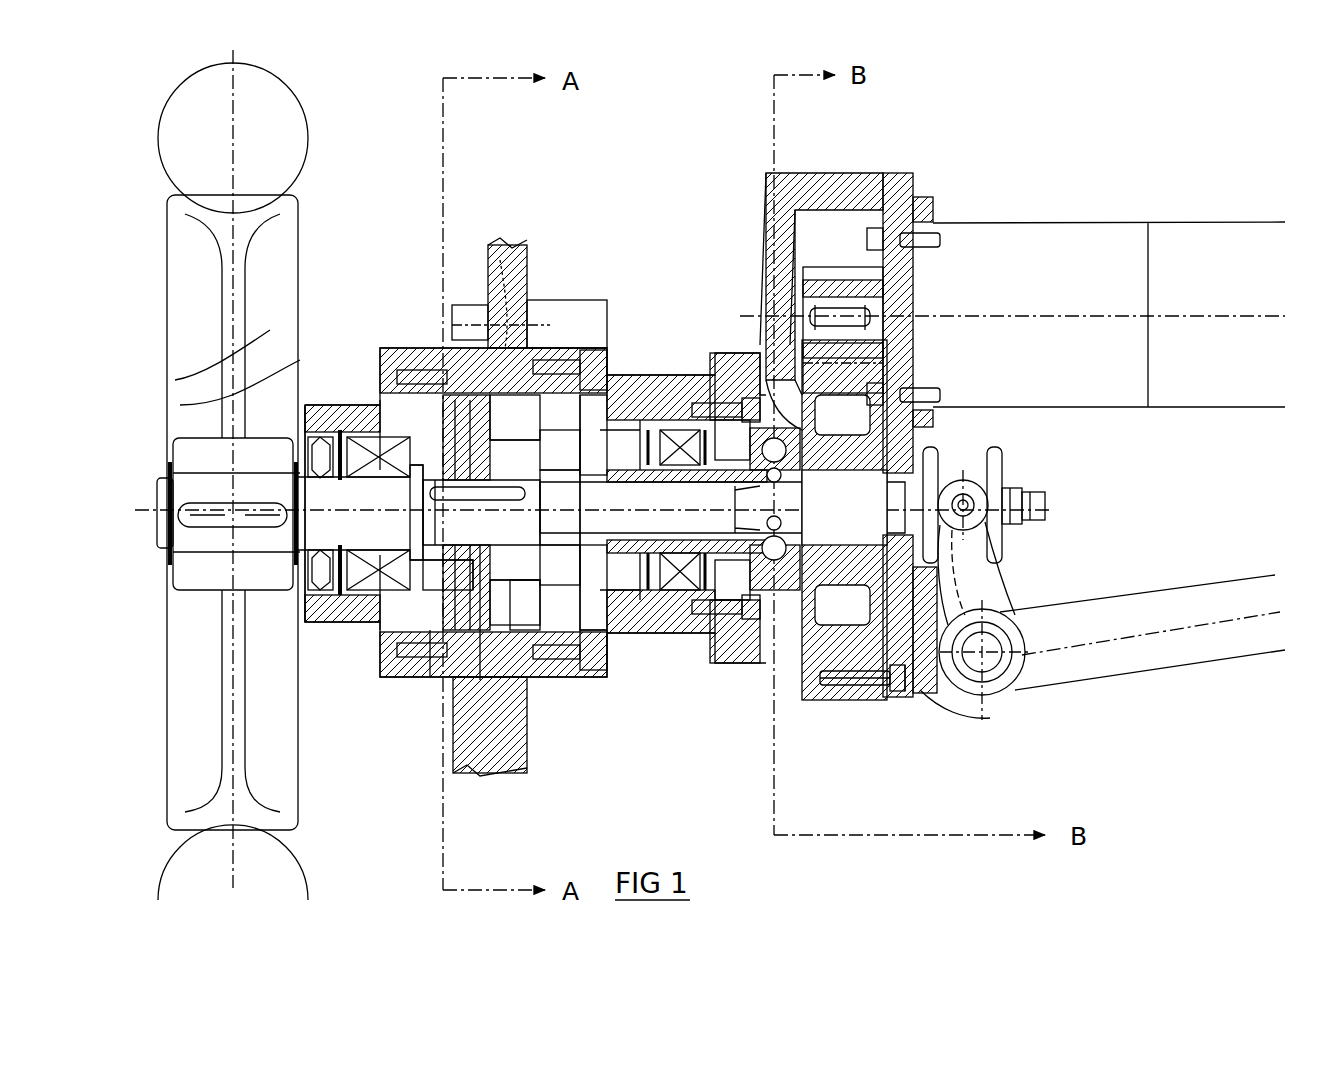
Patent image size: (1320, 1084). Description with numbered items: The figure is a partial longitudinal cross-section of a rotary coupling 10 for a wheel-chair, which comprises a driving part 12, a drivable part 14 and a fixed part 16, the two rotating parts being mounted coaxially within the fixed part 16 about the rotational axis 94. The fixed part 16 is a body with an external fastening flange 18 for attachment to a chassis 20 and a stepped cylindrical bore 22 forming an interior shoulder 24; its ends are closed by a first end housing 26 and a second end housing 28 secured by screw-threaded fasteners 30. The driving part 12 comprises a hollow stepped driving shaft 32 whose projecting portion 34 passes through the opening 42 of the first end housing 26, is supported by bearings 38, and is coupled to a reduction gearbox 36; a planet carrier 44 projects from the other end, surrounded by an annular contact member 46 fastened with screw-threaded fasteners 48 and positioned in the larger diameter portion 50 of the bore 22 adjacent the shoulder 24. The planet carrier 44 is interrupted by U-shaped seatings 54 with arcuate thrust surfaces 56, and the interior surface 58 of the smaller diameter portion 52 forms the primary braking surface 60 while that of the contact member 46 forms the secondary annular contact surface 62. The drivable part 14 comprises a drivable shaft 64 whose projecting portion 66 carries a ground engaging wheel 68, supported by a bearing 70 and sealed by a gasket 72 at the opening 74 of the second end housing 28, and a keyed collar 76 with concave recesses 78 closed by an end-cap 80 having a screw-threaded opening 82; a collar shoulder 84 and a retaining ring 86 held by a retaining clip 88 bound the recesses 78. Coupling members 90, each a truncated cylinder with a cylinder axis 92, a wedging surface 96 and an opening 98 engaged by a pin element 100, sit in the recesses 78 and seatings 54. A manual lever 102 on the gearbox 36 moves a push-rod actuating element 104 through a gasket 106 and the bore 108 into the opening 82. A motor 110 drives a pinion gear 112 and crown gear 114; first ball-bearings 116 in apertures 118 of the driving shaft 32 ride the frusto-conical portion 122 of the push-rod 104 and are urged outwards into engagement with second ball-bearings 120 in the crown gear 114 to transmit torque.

The rotary coupling 10 is at (360, 200).
The driving part 12 is at (640, 430).
The drivable part 14 is at (392, 462).
The fixed part 16 is at (555, 380).
The external fastening flange 18 is at (482, 400).
The chassis 20 is at (500, 300).
The stepped cylindrical bore 22 is at (430, 420).
The interior shoulder 24 is at (510, 730).
The first end housing 26 is at (670, 630).
The second end housing 28 is at (335, 600).
The screw-threaded fasteners 30 is at (400, 640).
The driving shaft 32 is at (665, 600).
The projecting portion 34 is at (982, 700).
The reduction gearbox 36 is at (830, 700).
The bearings 38 is at (680, 430).
The opening 42 is at (770, 665).
The planet carrier 44 is at (450, 400).
The annular contact member 46 is at (580, 640).
The screw-threaded fasteners 48 is at (555, 620).
The larger diameter portion 50 is at (416, 512).
The smaller diameter portion 52 is at (440, 600).
The U-shaped seatings 54 is at (515, 510).
The arcuate thrust surfaces 56 is at (485, 680).
The interior surface 58 is at (448, 575).
The primary braking surface 60 is at (460, 400).
The secondary annular contact surface 62 is at (590, 430).
The drivable shaft 64 is at (395, 600).
The projecting portion 66 is at (205, 590).
The ground engaging wheel 68 is at (190, 812).
The bearing 70 is at (430, 620).
The gasket 72 is at (300, 640).
The opening 74 is at (345, 470).
The collar 76 is at (660, 600).
The concave recesses 78 is at (445, 630).
The end-cap 80 is at (640, 630).
The screw-threaded opening 82 is at (690, 640).
The collar shoulder 84 is at (520, 310).
The retaining ring 86 is at (393, 350).
The retaining clip 88 is at (393, 405).
The coupling members 90 is at (490, 450).
The cylinder axis 92 is at (530, 630).
The rotational axis 94 is at (157, 520).
The wedging surface 96 is at (435, 680).
The opening 98 is at (475, 420).
The pin element 100 is at (520, 330).
The manual lever 102 is at (1160, 650).
The push-rod actuating element 104 is at (678, 519).
The gasket 106 is at (920, 480).
The bore 108 is at (780, 700).
The motor 110 is at (1055, 250).
The pinion gear 112 is at (845, 280).
The crown gear 114 is at (812, 872).
The first ball-bearings 116 is at (790, 700).
The apertures 118 is at (835, 700).
The second ball-bearings 120 is at (770, 420).
The frusto-conical portion 122 is at (778, 519).